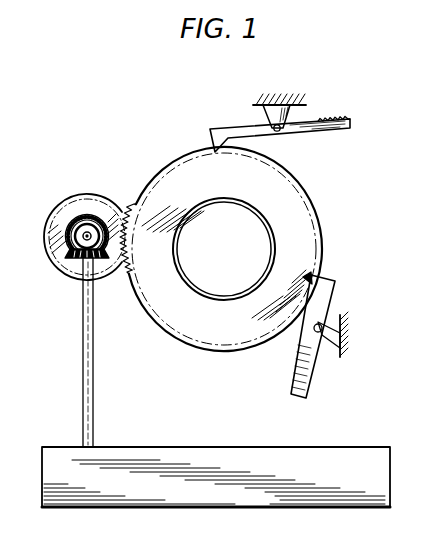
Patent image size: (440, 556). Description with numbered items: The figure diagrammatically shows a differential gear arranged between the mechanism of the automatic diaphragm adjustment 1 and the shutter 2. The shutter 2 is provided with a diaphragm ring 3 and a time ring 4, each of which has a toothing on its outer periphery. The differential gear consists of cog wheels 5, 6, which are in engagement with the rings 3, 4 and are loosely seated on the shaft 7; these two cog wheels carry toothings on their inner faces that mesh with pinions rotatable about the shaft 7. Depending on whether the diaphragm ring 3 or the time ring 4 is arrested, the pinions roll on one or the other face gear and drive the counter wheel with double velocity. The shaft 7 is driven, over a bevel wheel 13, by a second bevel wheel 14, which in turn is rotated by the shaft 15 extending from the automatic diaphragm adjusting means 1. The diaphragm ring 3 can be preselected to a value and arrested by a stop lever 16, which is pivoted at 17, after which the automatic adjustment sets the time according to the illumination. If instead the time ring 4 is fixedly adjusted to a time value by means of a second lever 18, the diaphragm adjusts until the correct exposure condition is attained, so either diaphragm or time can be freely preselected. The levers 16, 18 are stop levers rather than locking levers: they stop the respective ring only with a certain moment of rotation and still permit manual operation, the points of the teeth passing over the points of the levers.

The automatic diaphragm adjustment 1 is at (173, 455).
The shutter 2 is at (257, 232).
The diaphragm ring 3 is at (322, 240).
The time ring 4 is at (224, 249).
The cog wheel 5 is at (102, 200).
The cog wheel 6 is at (87, 237).
The shaft 7 is at (80, 237).
The bevel wheel 13 is at (82, 226).
The second bevel wheel 14 is at (75, 262).
The shaft 15 is at (83, 373).
The stop lever 16 is at (342, 127).
The pivot 17 is at (287, 130).
The second lever 18 is at (327, 304).